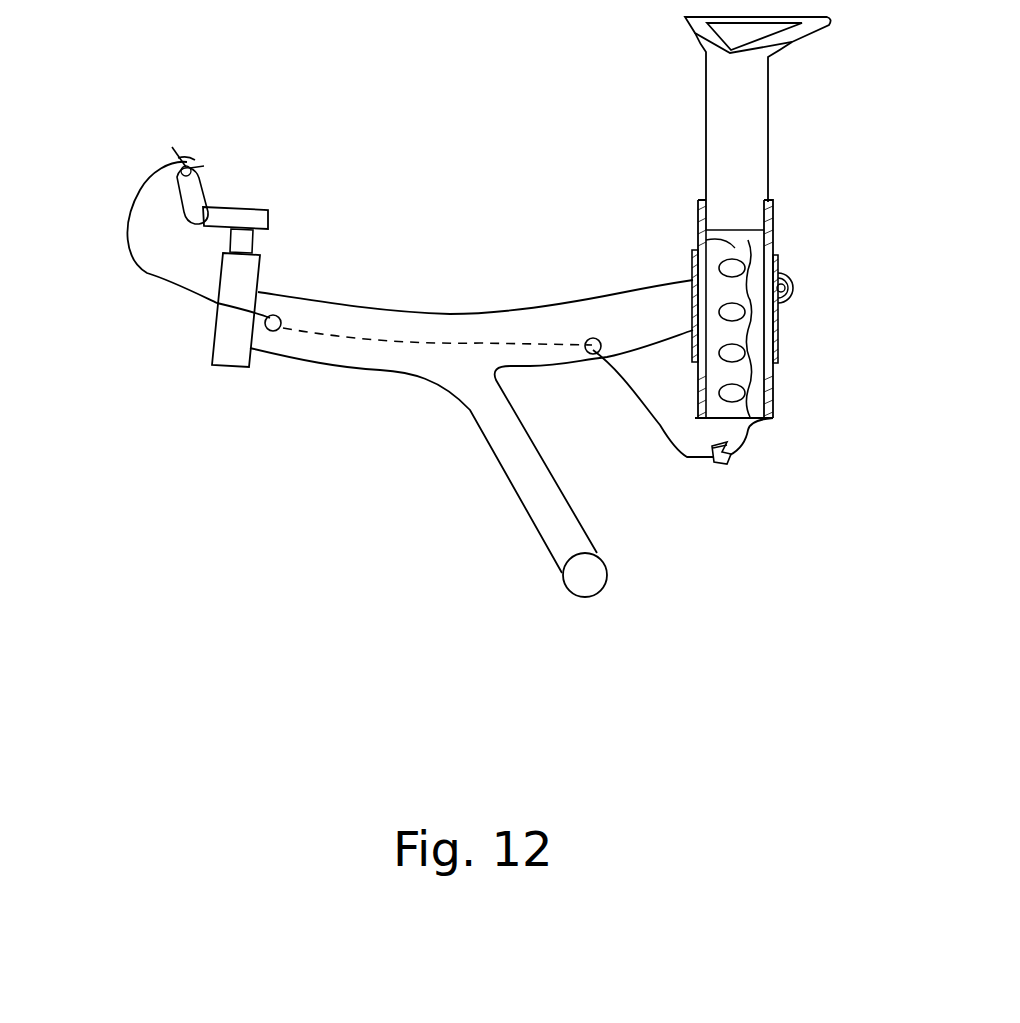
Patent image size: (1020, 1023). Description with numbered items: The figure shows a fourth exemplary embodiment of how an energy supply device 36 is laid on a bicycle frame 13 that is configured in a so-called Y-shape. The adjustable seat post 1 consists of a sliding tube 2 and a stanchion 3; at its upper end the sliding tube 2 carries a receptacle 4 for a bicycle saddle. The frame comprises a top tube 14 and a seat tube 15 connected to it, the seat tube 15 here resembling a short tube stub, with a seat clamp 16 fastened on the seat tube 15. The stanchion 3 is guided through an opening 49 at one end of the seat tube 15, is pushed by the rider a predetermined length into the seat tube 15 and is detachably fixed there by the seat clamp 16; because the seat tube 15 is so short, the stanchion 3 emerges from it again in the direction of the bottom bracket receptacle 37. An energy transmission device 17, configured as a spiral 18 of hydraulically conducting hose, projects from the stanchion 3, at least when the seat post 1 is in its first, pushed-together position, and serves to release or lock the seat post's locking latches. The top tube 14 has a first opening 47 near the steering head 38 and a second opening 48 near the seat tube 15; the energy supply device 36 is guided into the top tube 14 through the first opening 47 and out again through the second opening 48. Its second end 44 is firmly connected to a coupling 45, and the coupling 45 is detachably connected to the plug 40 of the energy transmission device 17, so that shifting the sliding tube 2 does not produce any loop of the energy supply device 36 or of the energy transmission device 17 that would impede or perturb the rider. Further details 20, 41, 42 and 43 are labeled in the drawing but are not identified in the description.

The adjustable seat post 1 is at (664, 119).
The sliding tube 2 is at (753, 115).
The stanchion 3 is at (772, 203).
The receptacle 4 is at (812, 23).
The bicycle frame 13 is at (362, 453).
The top tube 14 is at (428, 325).
The seat tube 15 is at (777, 333).
The seat clamp 16 is at (797, 290).
The energy transmission device 17 is at (771, 248).
The spiral 18 is at (753, 372).
The hook 20 is at (748, 427).
The energy supply device 36 is at (146, 272).
The bottom bracket receptacle 37 is at (585, 585).
The steering head 38 is at (224, 345).
The plug 40 is at (730, 455).
The strap end 41 is at (178, 158).
The pin rod 42 is at (197, 187).
The pin 43 is at (178, 152).
The second end 44 is at (684, 458).
The coupling 45 is at (727, 464).
The first opening 47 is at (277, 333).
The second opening 48 is at (583, 336).
The opening 49 is at (710, 255).